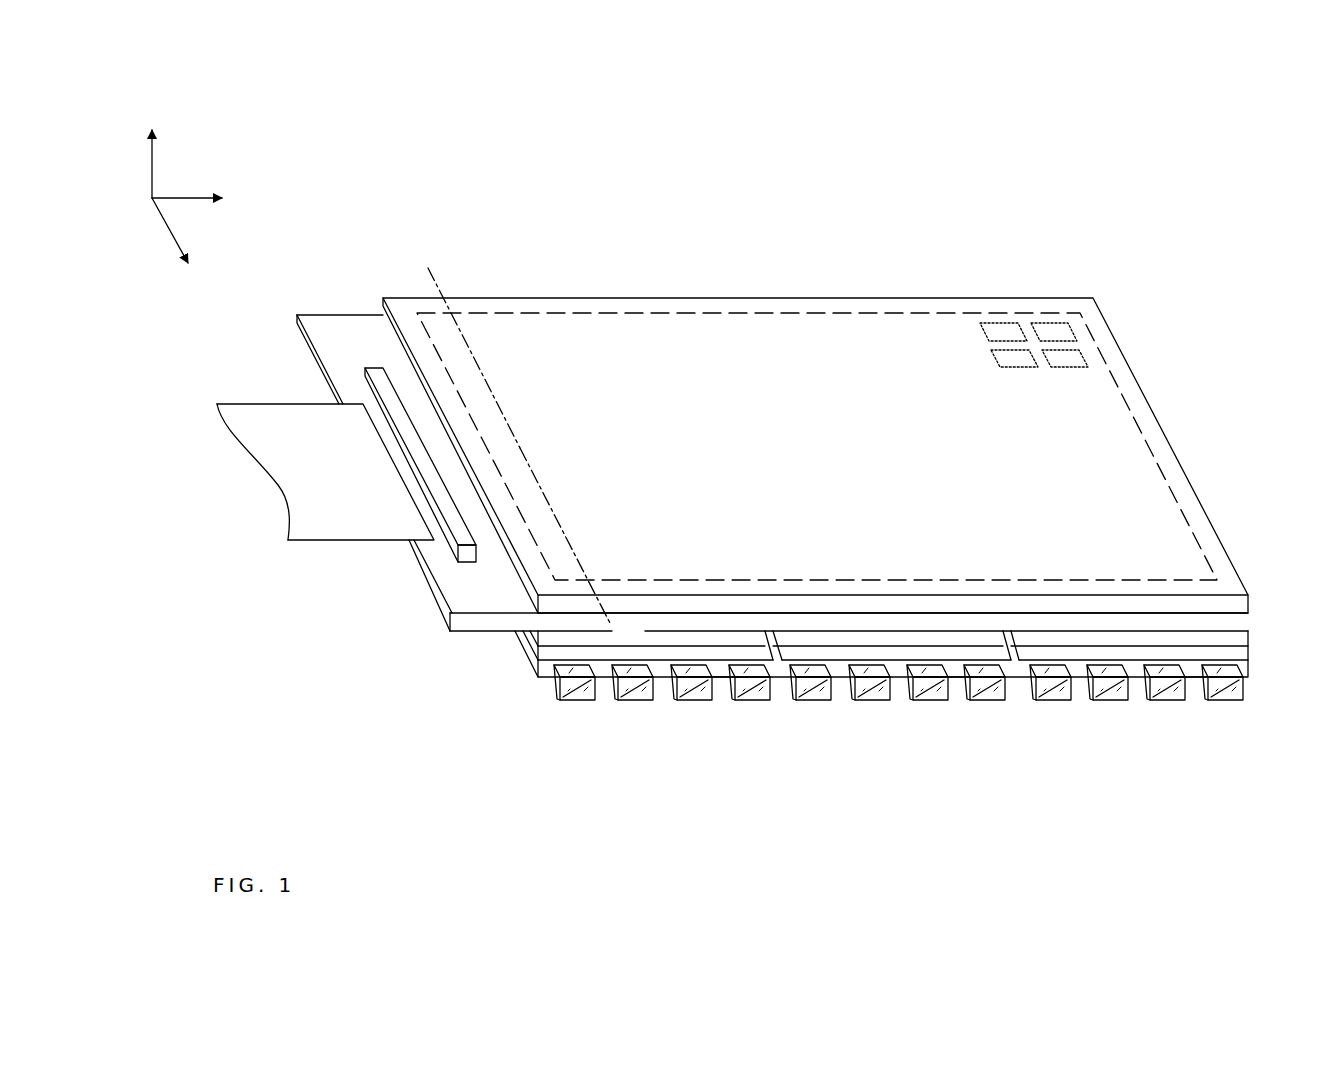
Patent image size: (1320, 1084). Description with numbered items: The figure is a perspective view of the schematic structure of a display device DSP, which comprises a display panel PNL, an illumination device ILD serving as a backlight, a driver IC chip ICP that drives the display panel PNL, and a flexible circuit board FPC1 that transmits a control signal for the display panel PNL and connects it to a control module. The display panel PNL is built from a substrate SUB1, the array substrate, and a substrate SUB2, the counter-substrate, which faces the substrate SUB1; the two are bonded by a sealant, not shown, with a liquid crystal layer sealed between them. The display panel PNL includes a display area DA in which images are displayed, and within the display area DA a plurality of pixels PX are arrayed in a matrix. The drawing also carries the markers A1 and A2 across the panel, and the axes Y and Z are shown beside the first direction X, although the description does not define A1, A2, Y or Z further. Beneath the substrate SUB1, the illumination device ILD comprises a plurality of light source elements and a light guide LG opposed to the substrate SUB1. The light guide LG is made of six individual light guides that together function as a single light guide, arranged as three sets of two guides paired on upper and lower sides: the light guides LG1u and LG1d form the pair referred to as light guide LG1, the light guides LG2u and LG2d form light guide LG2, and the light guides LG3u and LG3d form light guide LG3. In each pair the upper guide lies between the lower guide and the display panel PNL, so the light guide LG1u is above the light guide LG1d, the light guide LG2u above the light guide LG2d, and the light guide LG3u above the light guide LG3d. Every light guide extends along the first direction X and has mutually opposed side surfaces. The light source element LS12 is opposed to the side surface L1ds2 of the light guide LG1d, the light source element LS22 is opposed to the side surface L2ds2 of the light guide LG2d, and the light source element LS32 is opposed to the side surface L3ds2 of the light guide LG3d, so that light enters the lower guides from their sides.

The display device DSP is at (982, 172).
The display panel PNL is at (858, 298).
The substrate SUB1 is at (470, 622).
The substrate SUB2 is at (1090, 313).
The display area DA is at (705, 312).
The pixel PX is at (1000, 322).
The driver IC chip ICP is at (375, 366).
The flexible circuit board FPC1 is at (283, 473).
The line A1 (cross-section line start) A1 is at (467, 347).
The line A2 (cross-section line end) A2 is at (581, 547).
The illumination device ILD is at (472, 726).
The light guide LG is at (1175, 847).
The light guide LG1 is at (697, 797).
The light guide LG2 is at (882, 797).
The light guide LG3 is at (1180, 797).
The light guide LG1u is at (603, 652).
The light guide LG1d is at (659, 668).
The light guide LG2u is at (786, 652).
The light guide LG2d is at (843, 668).
The light guide LG3u is at (1083, 652).
The light guide LG3d is at (1134, 668).
The light source element LS12 is at (575, 700).
The light source element LS22 is at (933, 700).
The light source element LS32 is at (1232, 700).
The side surface L1ds2 is at (713, 680).
The side surface L2ds2 is at (895, 680).
The side surface L3ds2 is at (1192, 680).
The first direction X is at (198, 199).
The Y axis Y is at (180, 242).
The Z axis Z is at (152, 150).